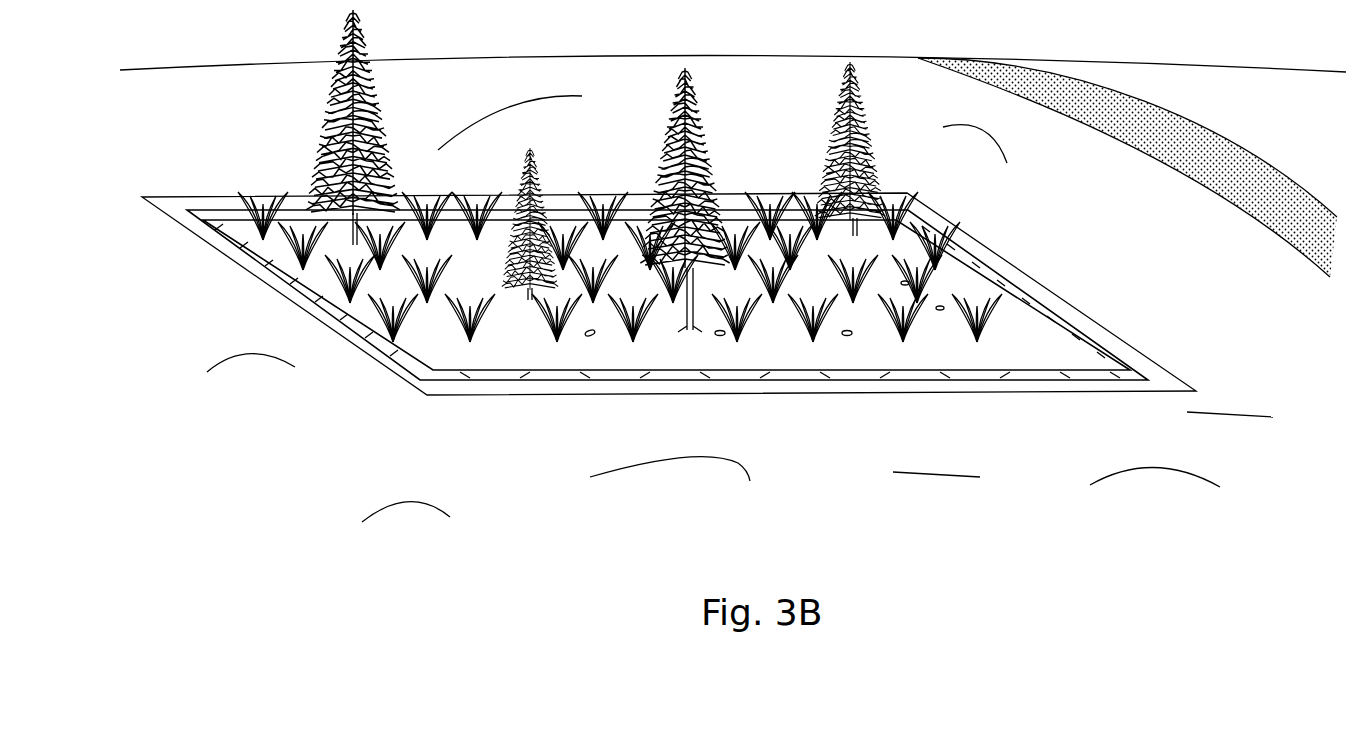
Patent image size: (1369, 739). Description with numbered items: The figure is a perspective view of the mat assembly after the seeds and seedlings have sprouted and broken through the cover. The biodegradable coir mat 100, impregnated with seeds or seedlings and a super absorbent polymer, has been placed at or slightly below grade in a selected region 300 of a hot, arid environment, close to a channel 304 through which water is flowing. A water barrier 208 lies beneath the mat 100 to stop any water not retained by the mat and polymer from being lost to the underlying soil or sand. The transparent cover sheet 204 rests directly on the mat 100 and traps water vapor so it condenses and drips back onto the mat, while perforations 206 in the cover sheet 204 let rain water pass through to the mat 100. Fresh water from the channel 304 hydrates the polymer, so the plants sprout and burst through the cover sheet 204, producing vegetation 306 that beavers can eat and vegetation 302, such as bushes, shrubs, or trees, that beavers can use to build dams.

The mat 100 is at (667, 285).
The cover sheet 204 is at (548, 350).
The perforations 206 is at (594, 335).
The water barrier 208 is at (1023, 265).
The selected region 300 is at (346, 428).
The vegetation 302 is at (873, 110).
The channel 304 is at (1193, 163).
The vegetation 306 is at (993, 317).